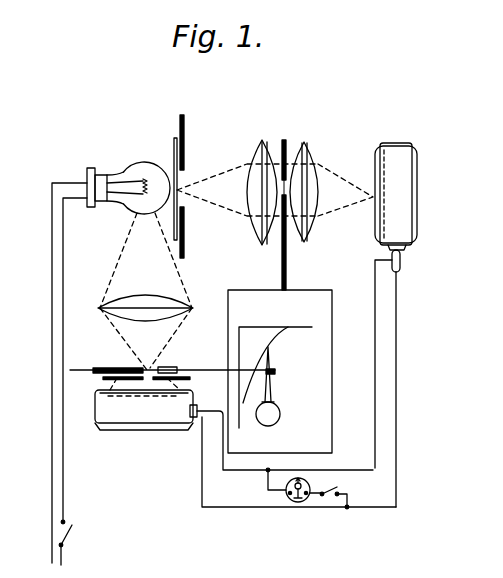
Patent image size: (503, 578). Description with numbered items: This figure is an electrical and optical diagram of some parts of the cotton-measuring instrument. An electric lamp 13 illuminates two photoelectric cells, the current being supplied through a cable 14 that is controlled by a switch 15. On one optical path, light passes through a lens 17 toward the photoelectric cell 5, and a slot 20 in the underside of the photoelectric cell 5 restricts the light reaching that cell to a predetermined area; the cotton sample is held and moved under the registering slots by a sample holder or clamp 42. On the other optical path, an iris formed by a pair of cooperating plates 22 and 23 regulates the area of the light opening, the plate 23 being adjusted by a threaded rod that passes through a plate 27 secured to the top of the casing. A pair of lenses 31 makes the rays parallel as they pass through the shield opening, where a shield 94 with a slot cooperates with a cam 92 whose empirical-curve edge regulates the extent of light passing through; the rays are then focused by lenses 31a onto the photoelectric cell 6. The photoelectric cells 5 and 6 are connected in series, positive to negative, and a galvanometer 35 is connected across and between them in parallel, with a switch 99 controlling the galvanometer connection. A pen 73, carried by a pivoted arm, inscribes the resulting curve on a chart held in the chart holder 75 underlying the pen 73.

The electric lamp 13 is at (137, 168).
The cable 14 is at (56, 284).
The switch 15 is at (68, 541).
The lens 17 is at (190, 307).
The plate 27 is at (173, 141).
The plate 23 is at (184, 120).
The plate 22 is at (184, 243).
The pair of lenses 31 is at (263, 141).
The lenses 31a is at (307, 162).
The shield 94 is at (302, 145).
The cam 92 is at (286, 250).
The photoelectric cell 6 is at (402, 170).
The chart holder 75 is at (332, 360).
The pen 73 is at (273, 357).
The sample holder or clamp 42 is at (172, 367).
The slot 20 is at (148, 380).
The photoelectric cell 5 is at (162, 418).
The galvanometer 35 is at (298, 502).
The switch 99 is at (329, 503).